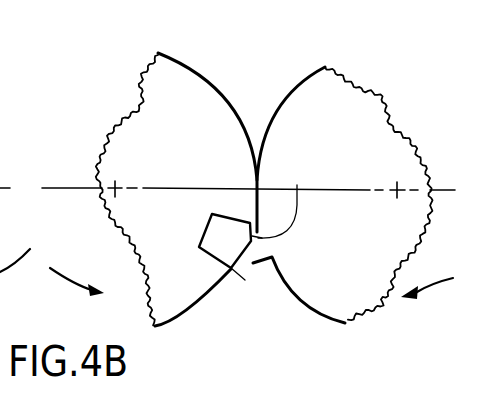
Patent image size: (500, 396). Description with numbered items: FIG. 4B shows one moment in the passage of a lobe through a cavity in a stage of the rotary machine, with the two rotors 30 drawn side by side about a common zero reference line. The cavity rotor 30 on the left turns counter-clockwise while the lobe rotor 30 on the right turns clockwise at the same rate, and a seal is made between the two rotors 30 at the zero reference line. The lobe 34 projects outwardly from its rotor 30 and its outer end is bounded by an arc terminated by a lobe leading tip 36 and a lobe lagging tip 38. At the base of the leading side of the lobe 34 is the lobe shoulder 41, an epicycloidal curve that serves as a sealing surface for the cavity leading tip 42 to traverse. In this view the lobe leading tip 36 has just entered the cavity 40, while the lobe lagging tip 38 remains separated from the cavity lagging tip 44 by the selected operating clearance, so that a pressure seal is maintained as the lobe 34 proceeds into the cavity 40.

The rotor 30 is at (111, 162).
The lobe 34 is at (257, 263).
The lobe leading tip 36 is at (203, 252).
The lobe lagging tip 38 is at (245, 280).
The cavity 40 is at (216, 259).
The lobe shoulder 41 is at (297, 185).
The cavity leading tip 42 is at (252, 232).
The cavity lagging tip 44 is at (233, 272).